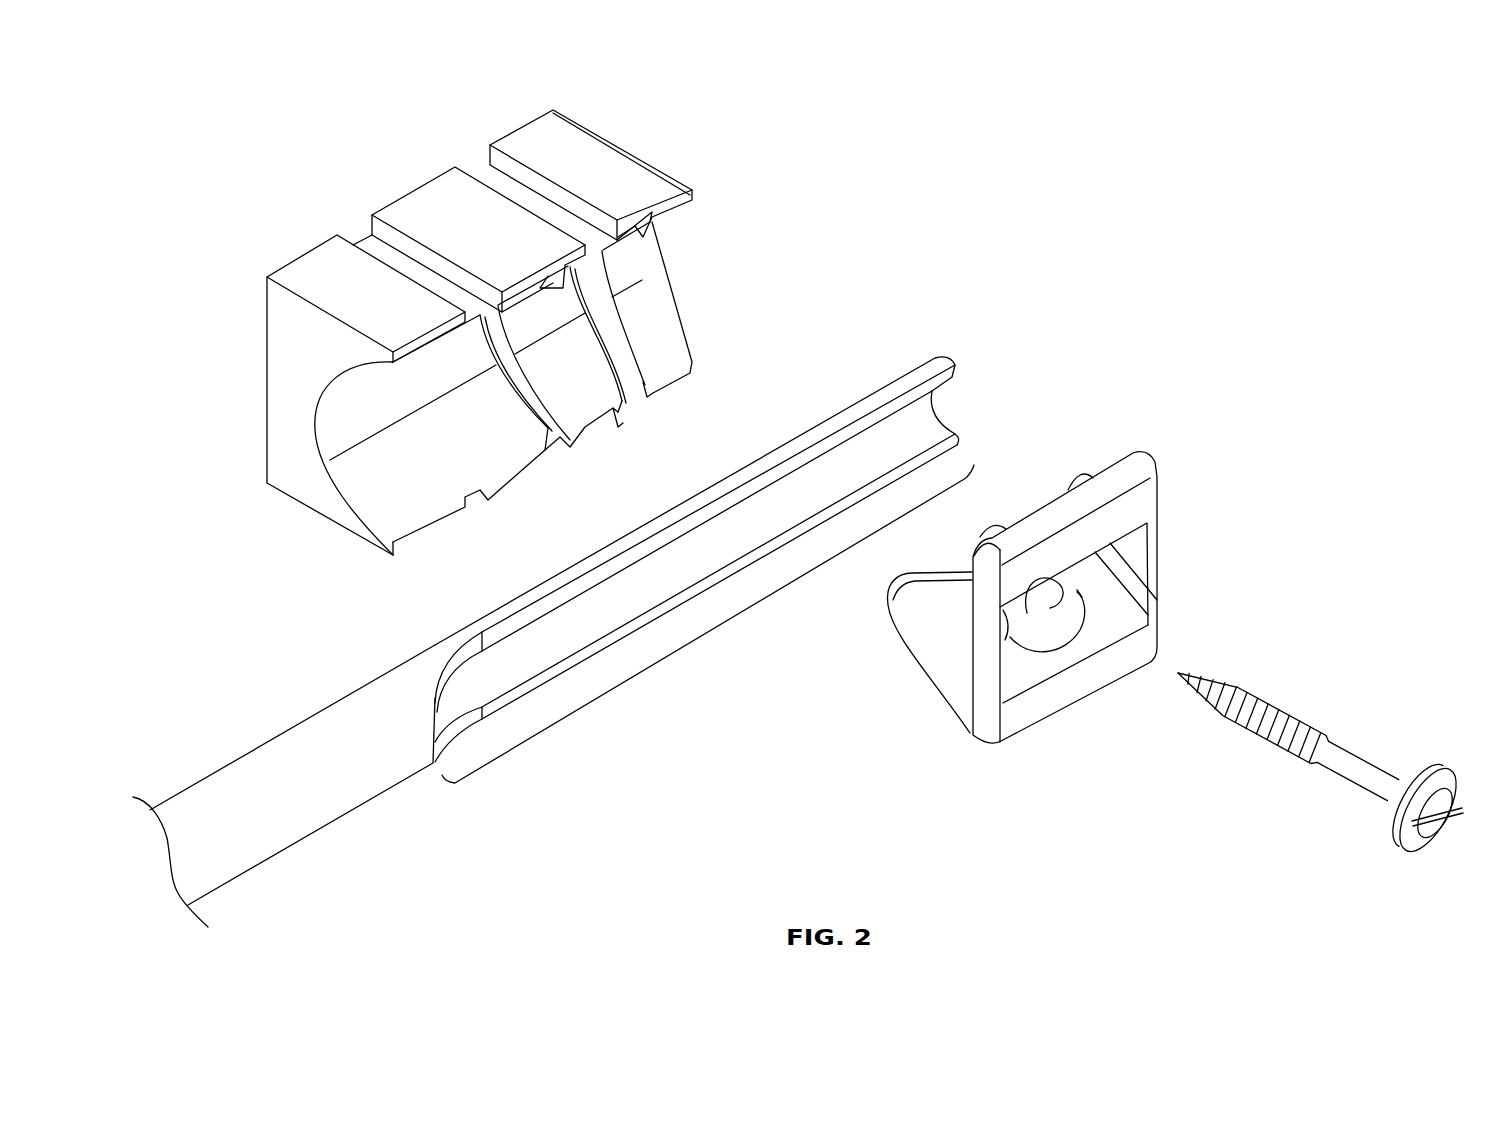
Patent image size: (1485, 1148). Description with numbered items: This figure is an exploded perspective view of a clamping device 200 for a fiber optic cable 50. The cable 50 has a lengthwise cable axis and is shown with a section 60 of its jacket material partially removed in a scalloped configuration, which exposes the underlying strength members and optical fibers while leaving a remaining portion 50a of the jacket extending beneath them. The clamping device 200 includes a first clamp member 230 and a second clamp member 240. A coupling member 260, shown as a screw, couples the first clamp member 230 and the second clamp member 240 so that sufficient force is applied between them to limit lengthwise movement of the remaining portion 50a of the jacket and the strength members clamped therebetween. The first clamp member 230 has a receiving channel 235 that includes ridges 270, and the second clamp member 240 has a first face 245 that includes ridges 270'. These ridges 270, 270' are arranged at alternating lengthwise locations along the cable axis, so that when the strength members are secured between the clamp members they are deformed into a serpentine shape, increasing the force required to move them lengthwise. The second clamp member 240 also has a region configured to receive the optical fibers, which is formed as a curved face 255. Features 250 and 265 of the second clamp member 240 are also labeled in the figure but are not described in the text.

The clamping device 200 is at (232, 148).
The first clamp member 230 is at (620, 145).
The receiving channel 235 is at (356, 454).
The ridges 270 is at (632, 363).
The fiber optic cable 50 is at (322, 828).
The remaining portion of the jacket 50a is at (797, 447).
The section of jacket partially removed 60 is at (700, 630).
The first face 245 is at (1020, 502).
The ridges 270' is at (971, 544).
The second clamp member 240 is at (1160, 462).
The spring 265 is at (1090, 598).
The frame lower portion 250 is at (1097, 675).
The curved face 255 is at (988, 658).
The coupling member 260 is at (1353, 750).